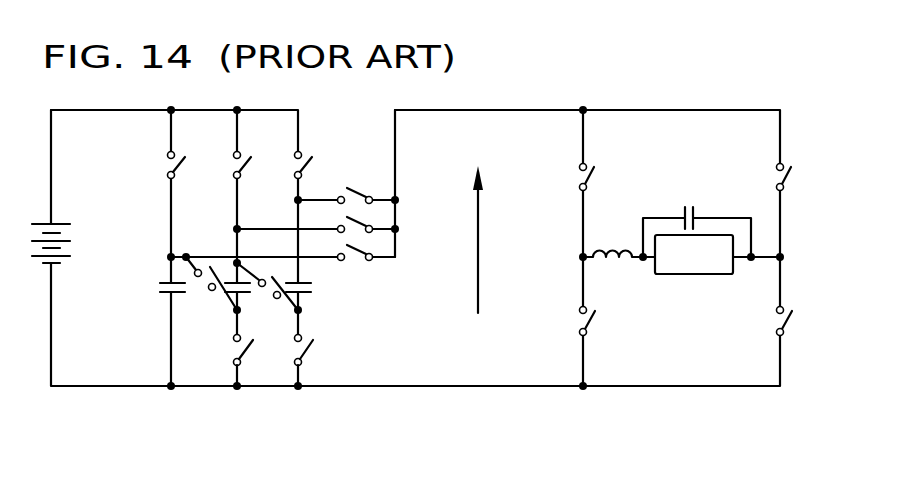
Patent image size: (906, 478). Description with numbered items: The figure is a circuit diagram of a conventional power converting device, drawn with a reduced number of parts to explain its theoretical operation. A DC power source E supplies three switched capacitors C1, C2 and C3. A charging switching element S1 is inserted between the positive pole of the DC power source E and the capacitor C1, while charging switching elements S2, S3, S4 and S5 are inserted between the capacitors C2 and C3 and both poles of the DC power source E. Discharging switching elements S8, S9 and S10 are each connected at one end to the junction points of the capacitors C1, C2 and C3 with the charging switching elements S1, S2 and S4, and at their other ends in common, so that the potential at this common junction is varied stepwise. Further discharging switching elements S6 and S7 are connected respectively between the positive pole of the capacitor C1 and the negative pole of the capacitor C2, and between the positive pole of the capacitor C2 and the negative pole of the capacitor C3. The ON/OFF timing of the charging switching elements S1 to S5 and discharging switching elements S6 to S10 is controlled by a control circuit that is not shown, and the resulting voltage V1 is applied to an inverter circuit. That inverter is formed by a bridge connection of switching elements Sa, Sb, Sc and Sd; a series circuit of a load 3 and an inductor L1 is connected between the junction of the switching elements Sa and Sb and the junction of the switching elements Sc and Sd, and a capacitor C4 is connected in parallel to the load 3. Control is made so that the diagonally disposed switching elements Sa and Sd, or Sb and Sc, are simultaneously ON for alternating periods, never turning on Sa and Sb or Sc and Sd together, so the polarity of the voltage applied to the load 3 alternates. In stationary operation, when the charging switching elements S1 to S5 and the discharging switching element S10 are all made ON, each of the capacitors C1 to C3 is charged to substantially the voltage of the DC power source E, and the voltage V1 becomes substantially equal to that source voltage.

The DC power source E is at (56, 186).
The charging switching element S1 is at (149, 196).
The charging switching element S2 is at (220, 196).
The charging switching element S3 is at (219, 361).
The charging switching element S4 is at (282, 211).
The charging switching element S5 is at (324, 361).
The discharging switching element S6 is at (211, 294).
The discharging switching element S7 is at (269, 300).
The discharging switching element S8 is at (346, 176).
The discharging switching element S9 is at (345, 213).
The discharging switching element S10 is at (318, 252).
The capacitor C1 is at (150, 319).
The capacitor C2 is at (230, 275).
The capacitor C3 is at (323, 305).
The capacitor C4 is at (699, 214).
The voltage applied to the inverter circuit V1 is at (493, 239).
The switching element Sa is at (612, 183).
The switching element Sb is at (614, 321).
The switching element Sc is at (810, 207).
The switching element Sd is at (808, 301).
The inductor L1 is at (613, 233).
The load 3 is at (693, 275).